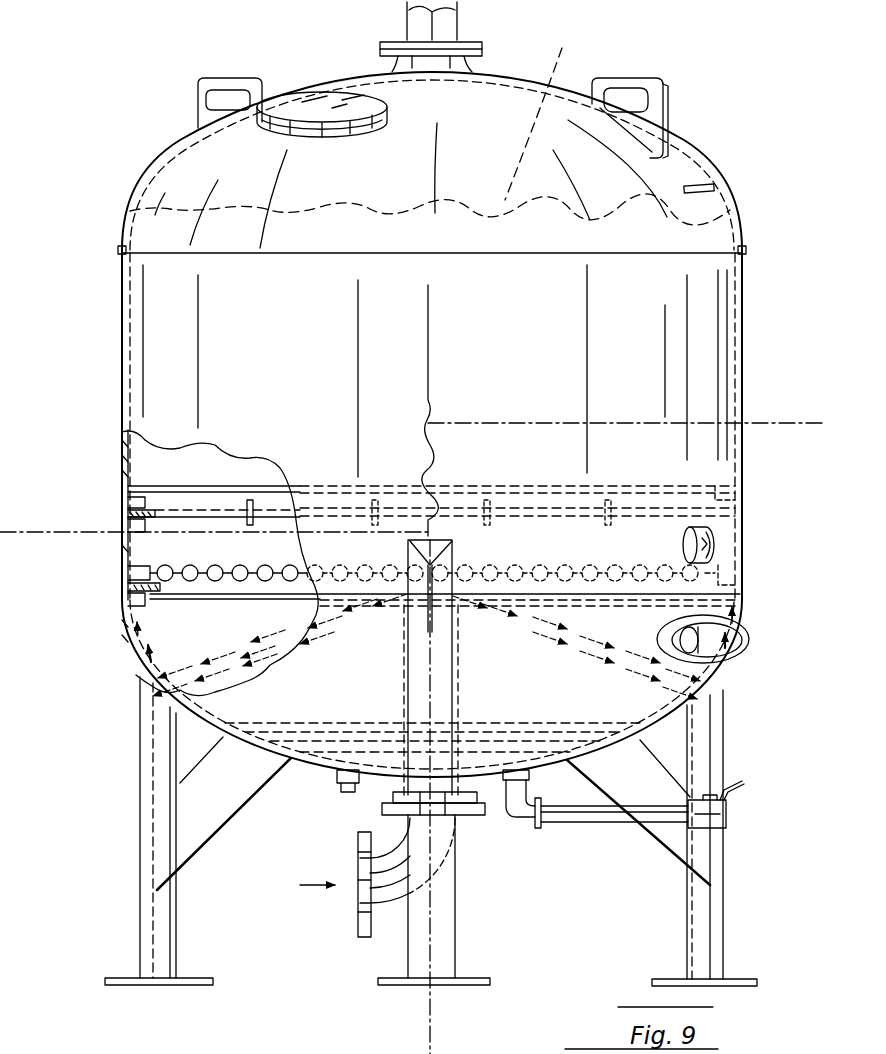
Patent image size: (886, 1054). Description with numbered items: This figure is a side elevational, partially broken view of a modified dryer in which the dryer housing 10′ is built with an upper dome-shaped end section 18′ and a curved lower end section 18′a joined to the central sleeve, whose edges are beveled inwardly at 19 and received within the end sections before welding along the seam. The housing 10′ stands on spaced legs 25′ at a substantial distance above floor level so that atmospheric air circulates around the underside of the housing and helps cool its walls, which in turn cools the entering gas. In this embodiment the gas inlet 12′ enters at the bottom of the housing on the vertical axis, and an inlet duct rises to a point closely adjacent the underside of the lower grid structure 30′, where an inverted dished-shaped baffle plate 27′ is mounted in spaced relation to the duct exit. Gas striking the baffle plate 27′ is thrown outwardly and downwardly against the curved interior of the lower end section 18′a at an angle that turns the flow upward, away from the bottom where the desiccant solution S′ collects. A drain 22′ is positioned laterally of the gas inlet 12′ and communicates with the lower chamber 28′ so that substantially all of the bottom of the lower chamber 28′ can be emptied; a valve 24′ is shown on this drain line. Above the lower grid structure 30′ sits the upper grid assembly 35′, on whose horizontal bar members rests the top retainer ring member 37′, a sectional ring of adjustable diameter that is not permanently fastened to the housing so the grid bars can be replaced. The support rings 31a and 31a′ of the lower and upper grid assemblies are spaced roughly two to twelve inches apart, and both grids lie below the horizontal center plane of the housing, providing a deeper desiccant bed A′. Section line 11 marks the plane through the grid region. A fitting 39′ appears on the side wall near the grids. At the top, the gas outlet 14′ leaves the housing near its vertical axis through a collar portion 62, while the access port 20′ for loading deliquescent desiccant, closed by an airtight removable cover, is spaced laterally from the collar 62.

The dryer housing 10′ is at (753, 275).
The gas outlet 14′ is at (470, 68).
The upper dome-shaped end section 18′ is at (701, 147).
The beveled edge 19 is at (118, 247).
The collar portion 62 is at (392, 58).
The access port 20′ is at (288, 106).
The desiccant bed A′ is at (546, 115).
The section line 11- 11 is at (778, 421).
The upper grid assembly 35′ is at (222, 470).
The top retainer ring member 37′ is at (138, 488).
The support ring of upper grid assembly 31a′ is at (152, 514).
The support ring of lower grid assembly 31a is at (130, 608).
The lower grid structure 30′ is at (272, 597).
The lower chamber 28′ is at (142, 646).
The inverted dished-shaped baffle plate 27′ is at (447, 590).
The sensor fitting 39′ is at (712, 542).
The lower end section 18′a is at (720, 660).
The gas inlet 12′ is at (470, 780).
The desiccant solution S′ is at (333, 745).
The drain 22′ is at (531, 778).
The drain valve 24′ is at (735, 815).
The legs 25′ is at (180, 937).